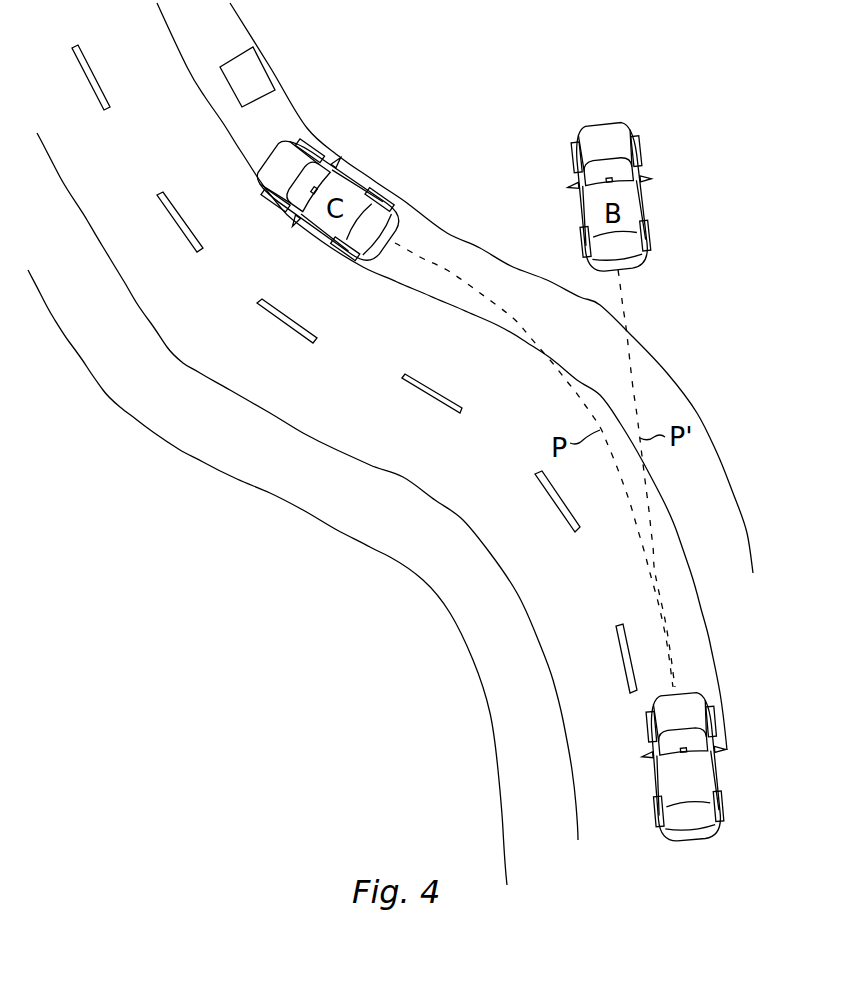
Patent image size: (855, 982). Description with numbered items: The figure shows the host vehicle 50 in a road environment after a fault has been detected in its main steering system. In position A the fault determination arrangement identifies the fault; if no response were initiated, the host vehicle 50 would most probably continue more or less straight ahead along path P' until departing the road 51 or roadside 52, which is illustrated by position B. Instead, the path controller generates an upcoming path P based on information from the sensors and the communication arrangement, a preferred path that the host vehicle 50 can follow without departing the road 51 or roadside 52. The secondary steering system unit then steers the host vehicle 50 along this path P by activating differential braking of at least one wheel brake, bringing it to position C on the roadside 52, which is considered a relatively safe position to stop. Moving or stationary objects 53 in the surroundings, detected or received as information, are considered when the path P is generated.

The host vehicle 50 is at (648, 845).
The road 51 is at (163, 88).
The roadside 52 is at (215, 28).
The moving or stationary object 53 is at (254, 67).